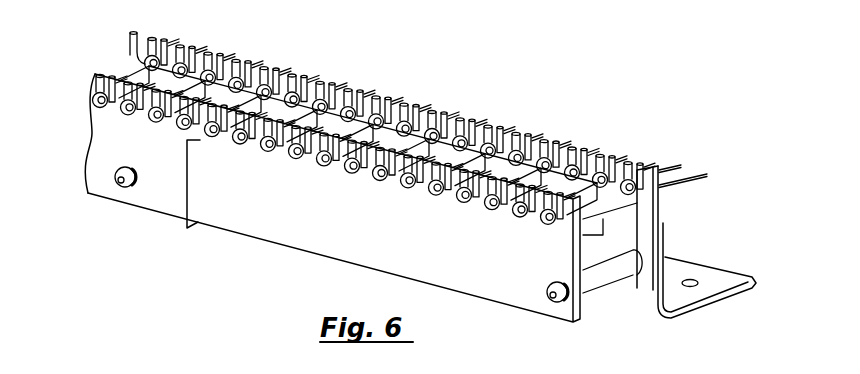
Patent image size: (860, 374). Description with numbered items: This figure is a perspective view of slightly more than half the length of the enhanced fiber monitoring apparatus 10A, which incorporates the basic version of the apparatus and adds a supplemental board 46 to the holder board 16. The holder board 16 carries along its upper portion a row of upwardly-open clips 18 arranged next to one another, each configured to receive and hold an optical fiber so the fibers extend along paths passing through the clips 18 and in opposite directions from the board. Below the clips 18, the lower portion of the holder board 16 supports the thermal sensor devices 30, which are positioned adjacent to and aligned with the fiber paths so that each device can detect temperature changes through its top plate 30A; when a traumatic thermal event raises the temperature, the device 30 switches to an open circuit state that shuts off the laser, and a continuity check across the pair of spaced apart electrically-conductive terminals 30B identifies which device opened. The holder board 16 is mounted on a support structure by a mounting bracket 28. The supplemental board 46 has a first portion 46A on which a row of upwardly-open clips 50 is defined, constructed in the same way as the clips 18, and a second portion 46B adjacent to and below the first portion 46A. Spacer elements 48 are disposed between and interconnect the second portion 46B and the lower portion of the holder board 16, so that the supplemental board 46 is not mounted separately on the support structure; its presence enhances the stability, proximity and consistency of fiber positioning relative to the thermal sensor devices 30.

The fiber monitoring apparatus 10A is at (660, 148).
The holder board 16 is at (657, 208).
The clips 18 is at (433, 111).
The mounting bracket 28 is at (693, 274).
The thermal sensor device 30 is at (620, 214).
The top plate 30A is at (445, 158).
The electrically-conductive terminals 30B is at (568, 142).
The supplemental board 46 is at (388, 257).
The first portion 46A is at (93, 85).
The second portion 46B is at (188, 188).
The spacer elements 48 is at (128, 188).
The clips 50 is at (370, 172).